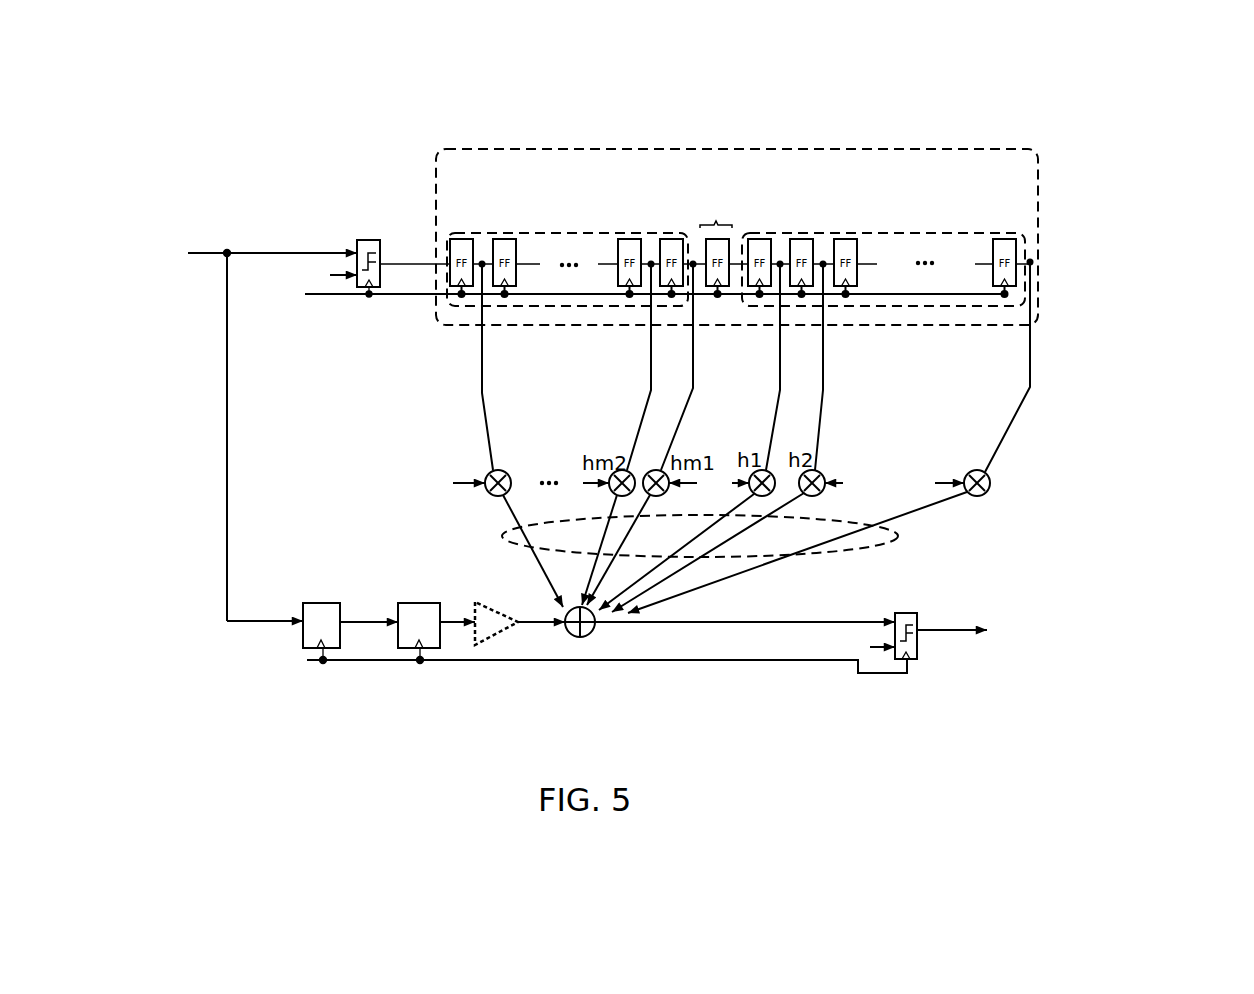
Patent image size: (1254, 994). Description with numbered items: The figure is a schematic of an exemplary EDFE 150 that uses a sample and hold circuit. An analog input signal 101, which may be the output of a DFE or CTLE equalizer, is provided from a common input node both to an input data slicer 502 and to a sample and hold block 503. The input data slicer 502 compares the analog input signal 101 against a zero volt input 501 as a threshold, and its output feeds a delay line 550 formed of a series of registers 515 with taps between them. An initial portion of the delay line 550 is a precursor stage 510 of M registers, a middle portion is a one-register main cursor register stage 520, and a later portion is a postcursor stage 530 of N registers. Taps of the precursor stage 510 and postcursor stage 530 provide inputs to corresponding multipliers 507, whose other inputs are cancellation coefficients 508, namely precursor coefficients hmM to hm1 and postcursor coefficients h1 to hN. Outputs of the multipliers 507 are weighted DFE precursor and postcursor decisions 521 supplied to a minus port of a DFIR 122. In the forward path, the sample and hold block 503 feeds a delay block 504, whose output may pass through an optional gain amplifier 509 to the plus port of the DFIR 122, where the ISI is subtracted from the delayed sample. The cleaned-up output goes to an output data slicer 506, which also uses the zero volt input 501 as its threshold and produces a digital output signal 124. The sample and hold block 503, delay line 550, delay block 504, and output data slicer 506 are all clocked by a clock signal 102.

The analog input signal 101 is at (204, 252).
The clock signal 102 is at (342, 295).
The DFIR 122 is at (556, 612).
The digital output signal 124 is at (950, 633).
The EDFE 150 is at (1115, 70).
The zero volt input 501 is at (332, 276).
The input data slicer 502 is at (353, 240).
The sample and hold block 503 is at (303, 602).
The delay block 504 is at (398, 602).
The output data slicer 506 is at (897, 612).
The multipliers 507 is at (990, 481).
The cancellation coefficients 508 is at (453, 483).
The gain amplifier 509 is at (476, 601).
The precursor stage 510 is at (535, 233).
The registers 515 is at (518, 262).
The main cursor register stage 520 is at (717, 207).
The weighted DFE precursor and postcursor decisions 521 is at (900, 537).
The postcursor stage 530 is at (862, 240).
The delay line 550 is at (648, 148).